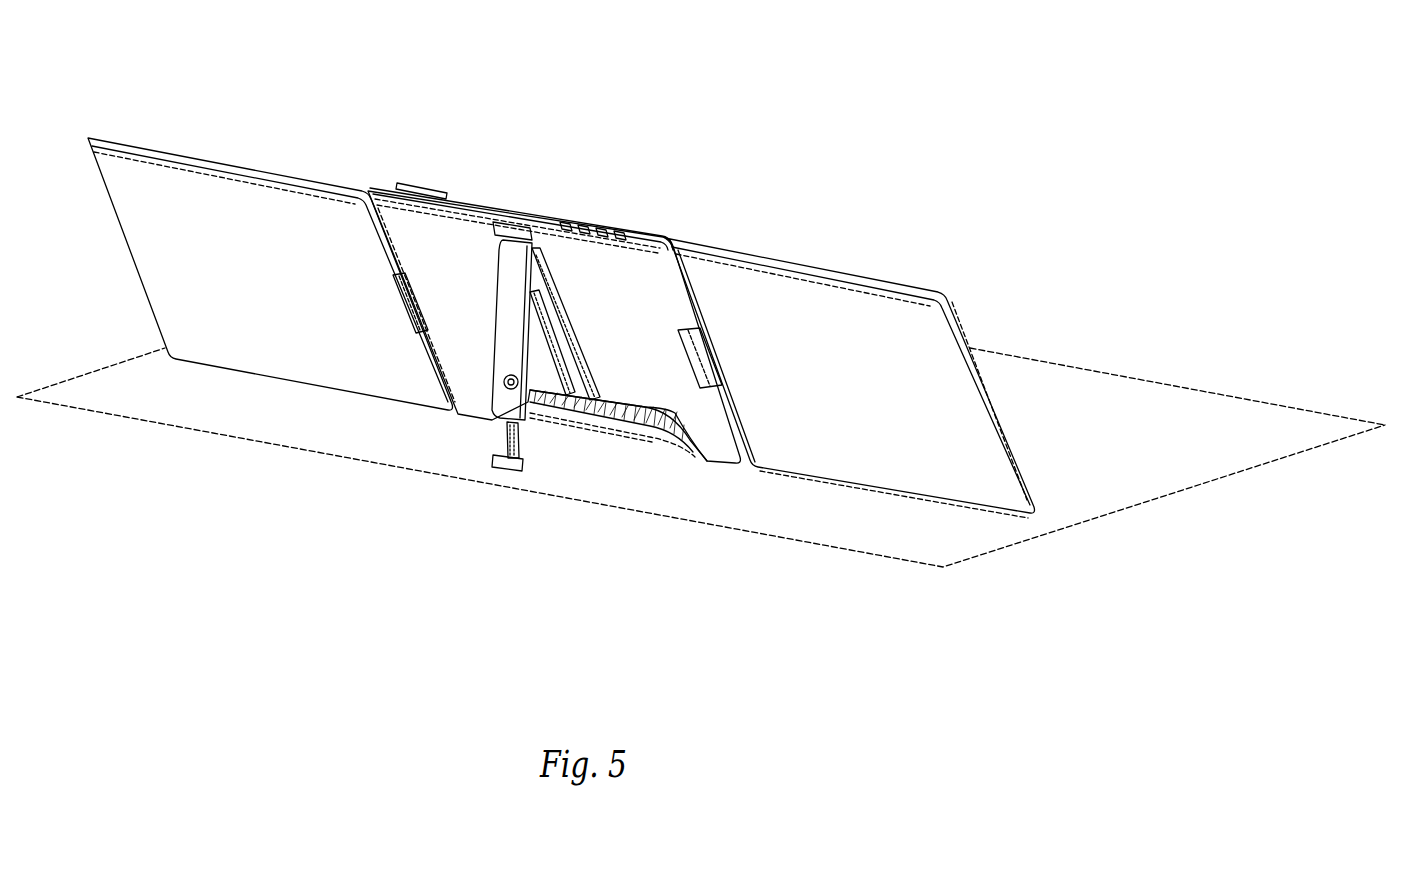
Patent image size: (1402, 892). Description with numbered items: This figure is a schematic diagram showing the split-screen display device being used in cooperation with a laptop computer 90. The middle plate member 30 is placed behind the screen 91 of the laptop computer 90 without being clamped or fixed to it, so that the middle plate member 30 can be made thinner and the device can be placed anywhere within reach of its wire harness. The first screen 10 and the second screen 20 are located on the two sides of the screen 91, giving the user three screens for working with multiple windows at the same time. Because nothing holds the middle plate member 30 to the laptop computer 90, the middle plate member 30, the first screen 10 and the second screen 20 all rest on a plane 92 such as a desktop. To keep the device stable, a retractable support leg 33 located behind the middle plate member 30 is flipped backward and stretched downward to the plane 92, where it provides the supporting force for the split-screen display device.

The first screen 10 is at (205, 161).
The second screen 20 is at (797, 268).
The middle plate member 30 is at (533, 333).
The retractable support leg 33 is at (506, 404).
The laptop computer 90 is at (652, 440).
The screen 91 is at (610, 220).
The plane 92 is at (297, 434).